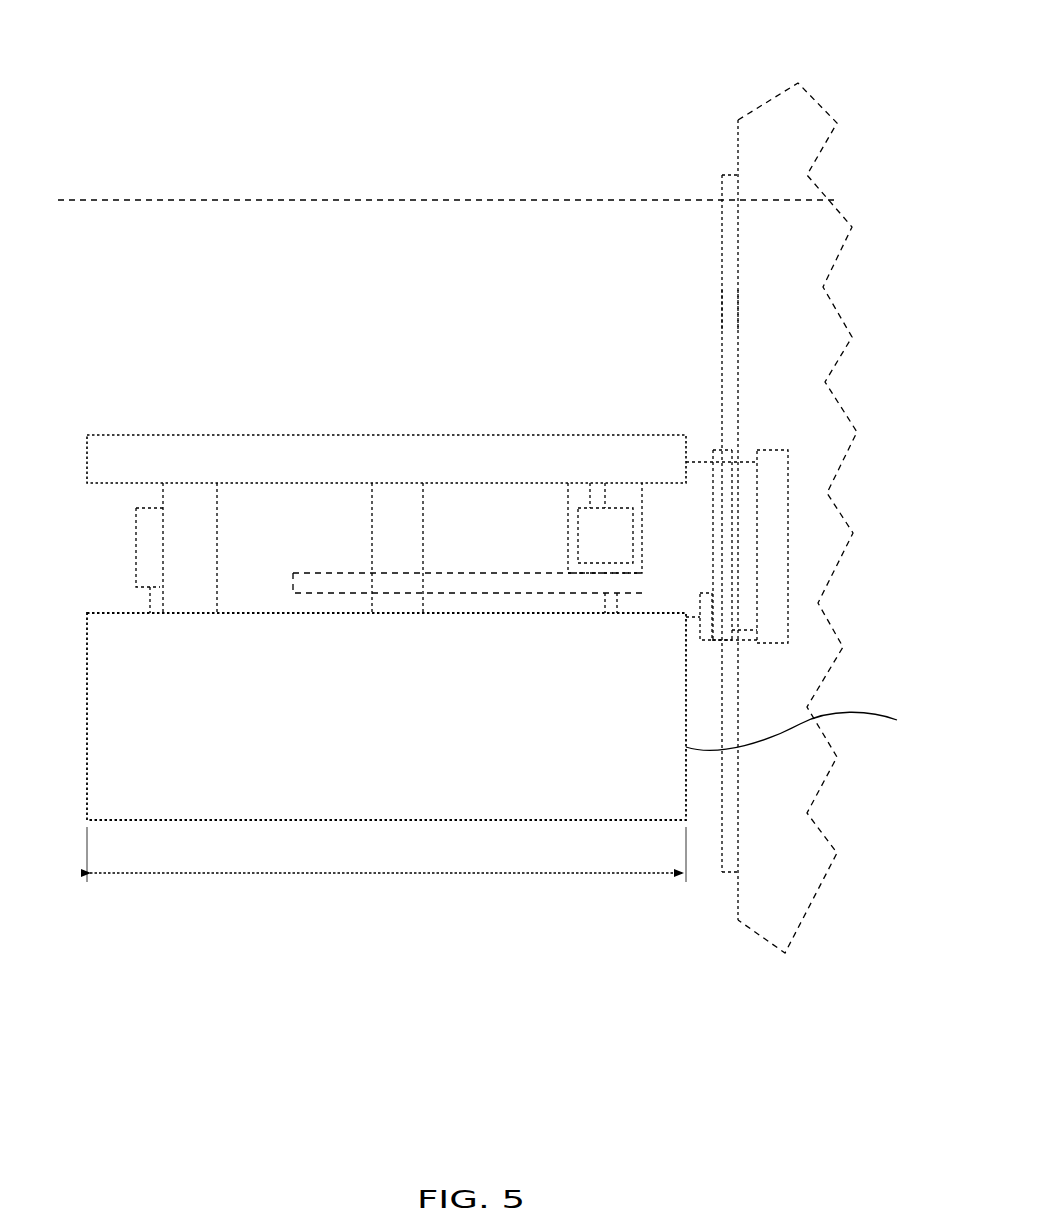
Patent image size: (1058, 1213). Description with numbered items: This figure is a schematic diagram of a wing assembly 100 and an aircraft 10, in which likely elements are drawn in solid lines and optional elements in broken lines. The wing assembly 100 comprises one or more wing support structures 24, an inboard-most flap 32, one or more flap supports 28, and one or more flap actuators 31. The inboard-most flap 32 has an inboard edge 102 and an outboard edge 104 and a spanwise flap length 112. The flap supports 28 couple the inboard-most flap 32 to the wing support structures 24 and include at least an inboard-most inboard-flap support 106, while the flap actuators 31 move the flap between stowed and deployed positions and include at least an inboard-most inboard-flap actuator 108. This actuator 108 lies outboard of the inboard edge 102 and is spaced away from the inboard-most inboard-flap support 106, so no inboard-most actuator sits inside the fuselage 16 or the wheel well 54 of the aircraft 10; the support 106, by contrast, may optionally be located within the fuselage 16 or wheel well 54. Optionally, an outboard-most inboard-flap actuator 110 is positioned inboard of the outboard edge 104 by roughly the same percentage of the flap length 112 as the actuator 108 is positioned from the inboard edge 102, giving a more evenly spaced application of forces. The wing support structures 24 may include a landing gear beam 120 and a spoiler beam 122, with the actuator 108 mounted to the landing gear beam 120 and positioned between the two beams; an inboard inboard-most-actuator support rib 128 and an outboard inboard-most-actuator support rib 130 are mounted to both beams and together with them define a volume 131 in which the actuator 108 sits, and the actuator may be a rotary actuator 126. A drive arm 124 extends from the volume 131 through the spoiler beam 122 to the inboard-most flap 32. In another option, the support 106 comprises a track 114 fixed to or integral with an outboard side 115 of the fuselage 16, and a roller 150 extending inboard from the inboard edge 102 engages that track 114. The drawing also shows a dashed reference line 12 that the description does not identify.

The aircraft 10 is at (195, 80).
The axis of rotation 12 is at (235, 198).
The fuselage 16 is at (736, 140).
The wing support structure 24 is at (192, 430).
The flap support 28 is at (217, 543).
The flap actuator 31 is at (133, 548).
The inboard-most flap 32 is at (82, 673).
The wheel well 54 is at (783, 770).
The wing assembly 100 is at (413, 380).
The inboard edge 102 is at (800, 728).
The outboard edge 104 is at (87, 728).
The inboard-most inboard-flap support 106 is at (795, 557).
The inboard-most inboard-flap actuator 108 is at (588, 480).
The outboard-most inboard-flap actuator 110 is at (147, 508).
The flap length 112 is at (387, 874).
The track 114 is at (707, 650).
The outboard side 115 is at (722, 325).
The landing gear beam 120 is at (300, 430).
The spoiler beam 122 is at (307, 570).
The drive arm 124 is at (612, 600).
The rotary actuator 126 is at (605, 535).
The inboard inboard-most-actuator support rib 128 is at (570, 555).
The outboard inboard-most-actuator support rib 130 is at (657, 603).
The volume 131 is at (622, 492).
The roller 150 is at (692, 645).